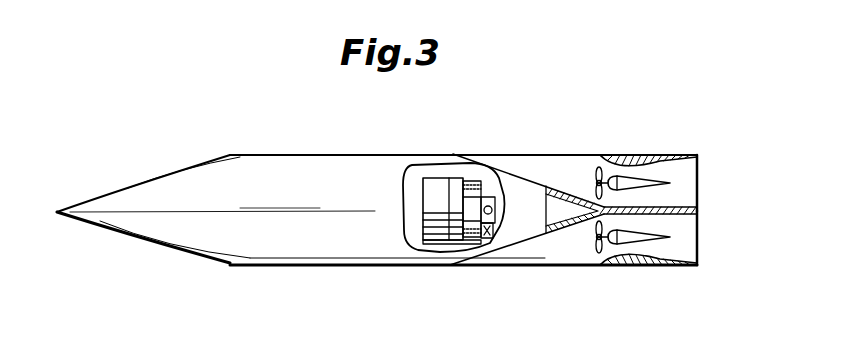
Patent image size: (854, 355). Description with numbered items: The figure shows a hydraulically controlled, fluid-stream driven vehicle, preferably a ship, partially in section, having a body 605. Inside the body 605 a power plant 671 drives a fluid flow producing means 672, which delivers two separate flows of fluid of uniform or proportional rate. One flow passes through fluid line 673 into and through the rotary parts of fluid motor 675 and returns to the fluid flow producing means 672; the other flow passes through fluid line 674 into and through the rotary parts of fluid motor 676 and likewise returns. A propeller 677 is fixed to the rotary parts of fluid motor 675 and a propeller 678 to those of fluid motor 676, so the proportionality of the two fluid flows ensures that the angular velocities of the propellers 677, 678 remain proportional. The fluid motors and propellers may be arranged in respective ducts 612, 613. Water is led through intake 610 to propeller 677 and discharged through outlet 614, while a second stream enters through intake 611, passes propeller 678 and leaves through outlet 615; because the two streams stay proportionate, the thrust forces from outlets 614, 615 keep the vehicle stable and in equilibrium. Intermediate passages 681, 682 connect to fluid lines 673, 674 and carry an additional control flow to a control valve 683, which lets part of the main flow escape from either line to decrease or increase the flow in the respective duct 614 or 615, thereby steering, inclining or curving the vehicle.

The body 605 is at (135, 193).
The intake 610 is at (548, 167).
The intake 611 is at (560, 263).
The duct 612 is at (627, 156).
The duct 613 is at (622, 261).
The outlet 614 is at (668, 158).
The outlet 615 is at (679, 262).
The power plant 671 is at (430, 200).
The fluid flow producing means 672 is at (456, 190).
The fluid line 673 is at (475, 183).
The fluid line 674 is at (475, 243).
The fluid motor 675 is at (638, 181).
The fluid motor 676 is at (638, 236).
The propeller 677 is at (598, 175).
The propeller 678 is at (598, 252).
The intermediate passage 681 is at (491, 200).
The intermediate passage 682 is at (485, 227).
The control valve 683 is at (490, 214).